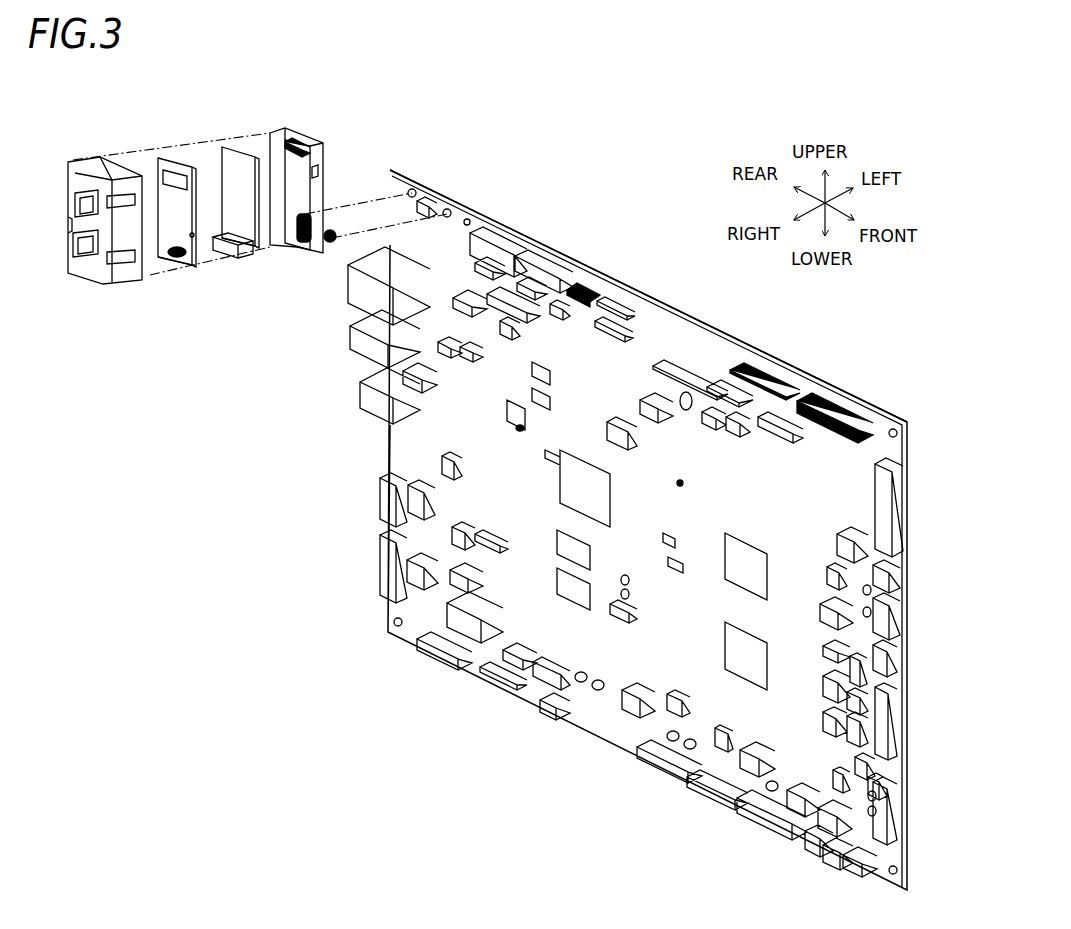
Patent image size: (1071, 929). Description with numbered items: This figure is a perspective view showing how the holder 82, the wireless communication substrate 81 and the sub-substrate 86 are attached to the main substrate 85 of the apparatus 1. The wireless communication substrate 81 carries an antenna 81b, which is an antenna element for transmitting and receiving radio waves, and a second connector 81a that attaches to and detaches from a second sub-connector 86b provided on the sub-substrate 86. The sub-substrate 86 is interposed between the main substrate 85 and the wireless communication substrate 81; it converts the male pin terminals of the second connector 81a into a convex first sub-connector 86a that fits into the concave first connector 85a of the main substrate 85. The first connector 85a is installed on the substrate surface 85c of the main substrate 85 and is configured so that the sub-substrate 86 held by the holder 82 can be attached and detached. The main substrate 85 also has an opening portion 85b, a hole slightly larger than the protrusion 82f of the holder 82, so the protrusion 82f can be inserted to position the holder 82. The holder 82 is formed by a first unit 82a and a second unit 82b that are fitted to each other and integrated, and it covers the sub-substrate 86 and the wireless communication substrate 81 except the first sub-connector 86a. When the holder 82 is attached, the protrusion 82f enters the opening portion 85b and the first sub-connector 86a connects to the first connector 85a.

The image forming apparatus 1 is at (656, 216).
The wireless communication substrate 81 is at (183, 262).
The second connector 81a is at (194, 268).
The antenna 81b is at (178, 176).
The holder 82 is at (333, 427).
The first unit 82a is at (317, 257).
The second unit 82b is at (103, 283).
The protrusion 82f is at (320, 212).
The main substrate 85 is at (606, 735).
The first connector 85a is at (434, 192).
The opening portion 85b is at (404, 175).
The substrate surface 85c is at (550, 620).
The sub-substrate 86 is at (247, 262).
The first sub-connector 86a is at (261, 252).
The second sub-connector 86b is at (216, 259).